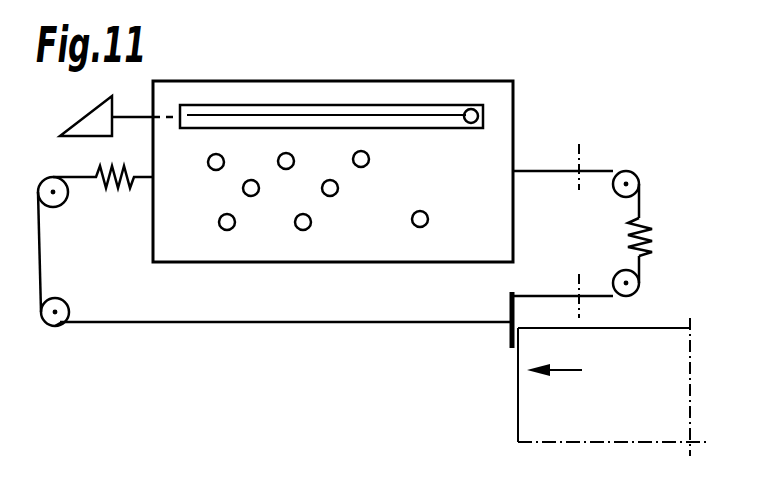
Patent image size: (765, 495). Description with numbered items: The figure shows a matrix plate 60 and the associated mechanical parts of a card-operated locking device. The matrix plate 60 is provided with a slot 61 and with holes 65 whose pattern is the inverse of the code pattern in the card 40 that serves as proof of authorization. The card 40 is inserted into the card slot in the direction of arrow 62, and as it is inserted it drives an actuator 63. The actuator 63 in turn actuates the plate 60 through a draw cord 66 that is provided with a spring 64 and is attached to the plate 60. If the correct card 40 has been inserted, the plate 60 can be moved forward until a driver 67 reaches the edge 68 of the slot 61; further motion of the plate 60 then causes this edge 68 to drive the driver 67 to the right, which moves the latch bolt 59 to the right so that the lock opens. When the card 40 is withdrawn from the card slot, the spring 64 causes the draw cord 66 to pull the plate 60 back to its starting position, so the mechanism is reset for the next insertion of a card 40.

The card 40 is at (654, 335).
The latch bolt 59 is at (82, 125).
The matrix plate 60 is at (508, 123).
The slot 61 is at (390, 107).
The arrow 62 is at (558, 373).
The actuator 63 is at (510, 328).
The spring 64 is at (648, 232).
The holes 65 is at (304, 231).
The draw cord 66 is at (126, 323).
The driver 67 is at (472, 107).
The edge 68 is at (199, 115).